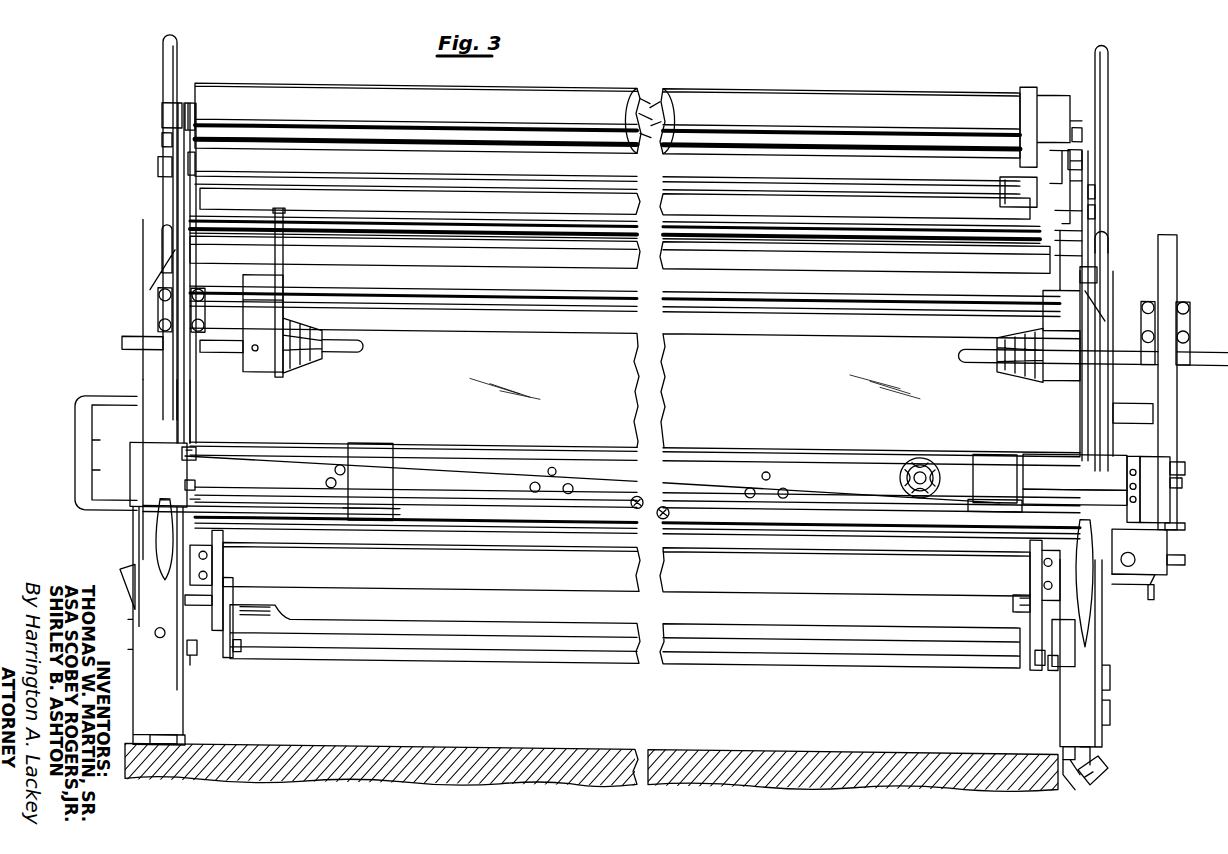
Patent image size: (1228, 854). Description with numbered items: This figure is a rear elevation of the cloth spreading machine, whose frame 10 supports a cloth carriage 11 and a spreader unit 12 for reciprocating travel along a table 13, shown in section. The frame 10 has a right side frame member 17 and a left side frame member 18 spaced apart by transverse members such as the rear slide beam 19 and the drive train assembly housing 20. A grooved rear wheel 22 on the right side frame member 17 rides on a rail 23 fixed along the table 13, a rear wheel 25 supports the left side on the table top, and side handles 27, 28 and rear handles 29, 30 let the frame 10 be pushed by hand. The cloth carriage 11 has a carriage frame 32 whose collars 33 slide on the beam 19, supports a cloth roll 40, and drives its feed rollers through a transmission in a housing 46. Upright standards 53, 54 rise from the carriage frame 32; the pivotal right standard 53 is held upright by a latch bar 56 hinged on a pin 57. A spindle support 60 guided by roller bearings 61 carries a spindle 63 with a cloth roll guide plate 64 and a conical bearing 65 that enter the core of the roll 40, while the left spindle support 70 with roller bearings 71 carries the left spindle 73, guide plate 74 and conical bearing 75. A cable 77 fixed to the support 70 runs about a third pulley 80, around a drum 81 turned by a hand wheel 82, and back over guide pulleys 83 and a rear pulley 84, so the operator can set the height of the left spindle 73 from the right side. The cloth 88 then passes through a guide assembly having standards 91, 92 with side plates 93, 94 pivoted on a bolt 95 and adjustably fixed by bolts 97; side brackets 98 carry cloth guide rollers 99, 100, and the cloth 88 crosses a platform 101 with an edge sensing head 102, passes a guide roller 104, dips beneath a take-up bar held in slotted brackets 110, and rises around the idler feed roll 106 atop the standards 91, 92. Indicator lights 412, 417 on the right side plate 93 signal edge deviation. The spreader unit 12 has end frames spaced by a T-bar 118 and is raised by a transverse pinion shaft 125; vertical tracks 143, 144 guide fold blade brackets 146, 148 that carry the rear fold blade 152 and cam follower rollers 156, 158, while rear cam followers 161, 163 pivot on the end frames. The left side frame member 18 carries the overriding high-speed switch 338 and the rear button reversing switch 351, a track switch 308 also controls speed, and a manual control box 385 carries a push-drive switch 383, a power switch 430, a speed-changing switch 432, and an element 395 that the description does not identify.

The frame 10 is at (101, 329).
The cloth carriage 11 is at (1149, 478).
The spreader unit 12 is at (695, 681).
The table 13 is at (755, 750).
The right side frame member 17 is at (1092, 710).
The left side frame member 18 is at (172, 710).
The rear slide beam 19 is at (800, 512).
The drive train assembly housing 20 is at (763, 391).
The rear circumferentially grooved wheel 22 is at (1092, 752).
The track or rail 23 is at (1065, 770).
The rear wheel 25 is at (178, 740).
The side handle 27 is at (1143, 415).
The side handle 28 is at (76, 448).
The rear handle 29 is at (1093, 620).
The rear handle 30 is at (157, 560).
The carriage frame 32 is at (1065, 484).
The collars or sleeves 33 is at (380, 478).
The cloth roll 40 is at (524, 238).
The housing 46 is at (135, 452).
The right upright standard 53 is at (1177, 248).
The left upright standard 54 is at (180, 395).
The pivoted latch bar 56 is at (1182, 484).
The pin 57 is at (1185, 466).
The spindle support 60 is at (1183, 360).
The roller bearings 61 is at (1146, 332).
The spindle 63 is at (1222, 344).
The cloth roll guide plate 64 is at (1048, 290).
The conical cloth roll bearing 65 is at (1010, 375).
The left spindle support 70 is at (165, 345).
The roller bearings 71 is at (158, 325).
The left spindle 73 is at (345, 353).
The guide plate 74 is at (283, 272).
The conical bearing 75 is at (300, 366).
The cable 77 is at (510, 460).
The third pulley 80 is at (185, 447).
The drum 81 is at (930, 465).
The hand wheel 82 is at (920, 458).
The guide pulleys 83 is at (333, 480).
The rear pulley 84 is at (186, 482).
The cloth 88 is at (306, 98).
The standard 91 is at (1100, 116).
The standard 92 is at (170, 108).
The right side plate 93 is at (1092, 160).
The left side plate 94 is at (185, 205).
The bolt 95 is at (165, 138).
The bolt 97 is at (163, 262).
The side brackets 98 is at (1100, 246).
The cloth guide roller 99 is at (418, 222).
The cloth guide roller 100 is at (444, 233).
The platform 101 is at (560, 207).
The edge sensing head 102 is at (1006, 180).
The guide roller 104 is at (283, 178).
The idler feed roll 106 is at (500, 118).
The elongated brackets 110 is at (190, 160).
The T-bar 118 is at (596, 580).
The transverse pinion shaft 125 is at (604, 542).
The vertical track 143 is at (1030, 573).
The vertical track 144 is at (225, 560).
The rear fold blade bracket 146 is at (1028, 608).
The rear fold blade bracket 148 is at (233, 600).
The rear fold blade 152 is at (503, 655).
The cam follower 156 is at (1037, 668).
The cam follower 158 is at (237, 652).
The rear cam follower 161 is at (1048, 672).
The rear cam follower 163 is at (195, 660).
The track switch 308 is at (1113, 781).
The overriding high-speed switch 338 is at (210, 576).
The rear button reversing switch 351 is at (158, 640).
The manual momentary push-drive switch 383 is at (1158, 585).
The manual control box 385 is at (1158, 540).
The pin 395 is at (1200, 513).
The left indicator light 412 is at (1096, 212).
The right indicator light 417 is at (1096, 192).
The manual motor or power switch 430 is at (1157, 600).
The manual switch 432 is at (1200, 556).